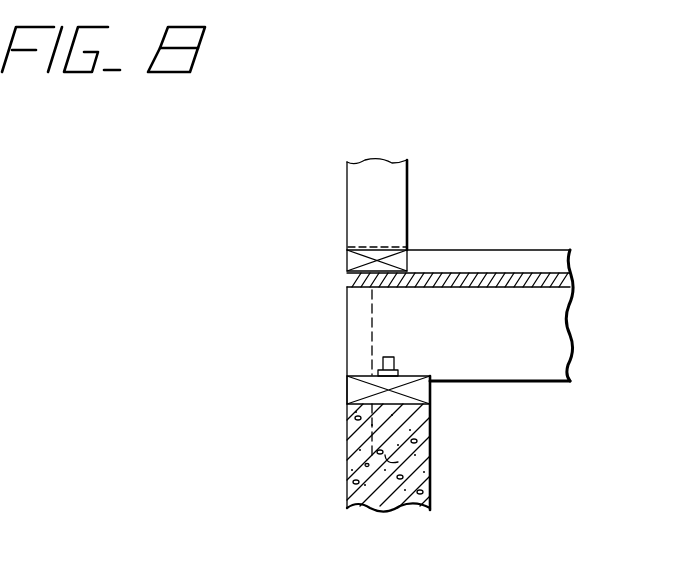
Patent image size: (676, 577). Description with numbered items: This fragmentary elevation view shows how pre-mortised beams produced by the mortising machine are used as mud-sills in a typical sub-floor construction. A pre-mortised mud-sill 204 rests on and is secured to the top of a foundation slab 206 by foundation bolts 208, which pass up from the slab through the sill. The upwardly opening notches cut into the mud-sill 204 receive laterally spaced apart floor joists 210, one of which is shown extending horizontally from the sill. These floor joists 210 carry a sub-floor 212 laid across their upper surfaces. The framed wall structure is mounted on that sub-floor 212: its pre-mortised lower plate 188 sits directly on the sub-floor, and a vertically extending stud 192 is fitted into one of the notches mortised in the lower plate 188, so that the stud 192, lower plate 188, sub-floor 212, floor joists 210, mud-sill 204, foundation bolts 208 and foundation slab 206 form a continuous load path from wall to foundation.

The stud 192 is at (400, 193).
The pre-mortised lower plate 188 is at (404, 262).
The sub-floor 212 is at (490, 273).
The floor joist 210 is at (560, 342).
The pre-mortised mud-sill 204 is at (430, 378).
The foundation bolt 208 is at (360, 446).
The foundation slab 206 is at (418, 462).